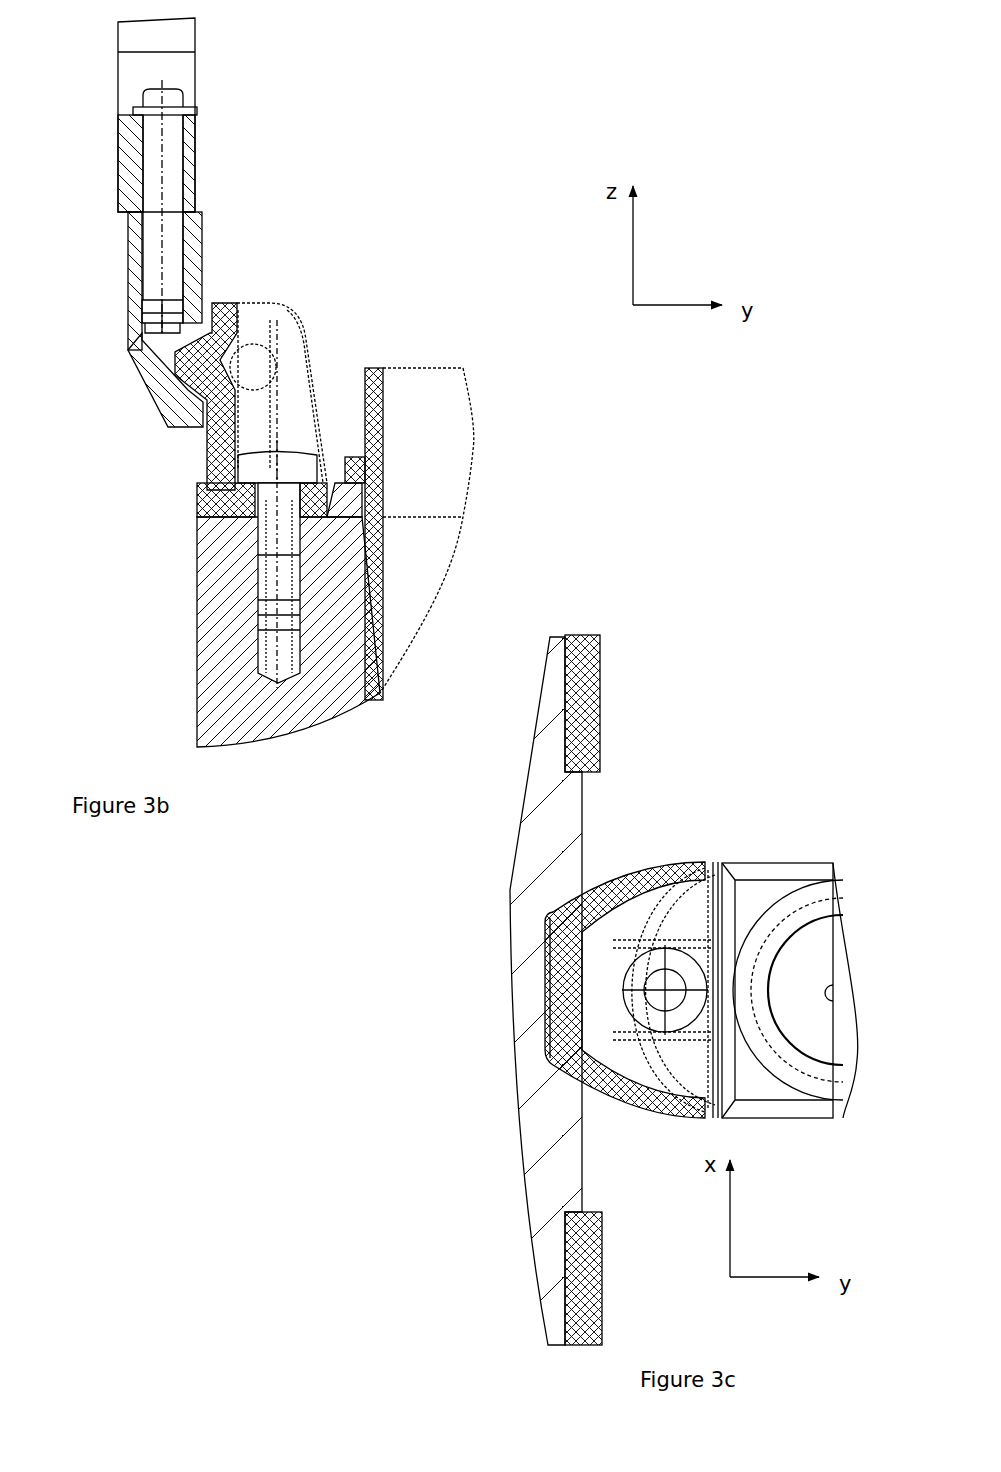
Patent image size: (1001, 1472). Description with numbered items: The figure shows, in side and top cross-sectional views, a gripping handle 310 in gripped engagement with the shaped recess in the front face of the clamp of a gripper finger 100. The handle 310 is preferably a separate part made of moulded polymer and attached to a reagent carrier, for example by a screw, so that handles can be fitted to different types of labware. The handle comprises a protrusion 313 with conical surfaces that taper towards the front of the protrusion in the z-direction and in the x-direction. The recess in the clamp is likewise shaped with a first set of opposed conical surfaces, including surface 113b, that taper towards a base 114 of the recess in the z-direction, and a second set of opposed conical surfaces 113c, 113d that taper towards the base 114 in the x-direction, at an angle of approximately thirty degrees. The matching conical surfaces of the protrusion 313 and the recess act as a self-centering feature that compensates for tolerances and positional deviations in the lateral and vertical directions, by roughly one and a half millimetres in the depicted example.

In FIG. 3B, the gripper finger 100 is at (191, 326).
In FIG. 3B, the second conical surface 113b is at (186, 392).
In FIG. 3C, the third conical surface 113c is at (563, 897).
In FIG. 3C, the fourth conical surface 113d is at (570, 1090).
In FIG. 3B, the base of the recess 114 is at (200, 358).
In FIG. 3C, the base of the recess 114 is at (545, 1018).
In FIG. 3B, the gripping handle 310 is at (218, 488).
In FIG. 3B, the protrusion 313 is at (210, 357).
In FIG. 3C, the protrusion 313 is at (573, 968).